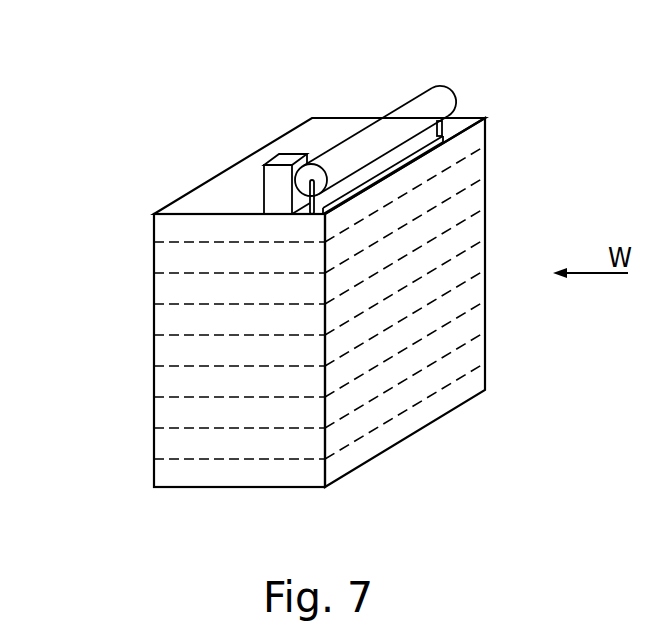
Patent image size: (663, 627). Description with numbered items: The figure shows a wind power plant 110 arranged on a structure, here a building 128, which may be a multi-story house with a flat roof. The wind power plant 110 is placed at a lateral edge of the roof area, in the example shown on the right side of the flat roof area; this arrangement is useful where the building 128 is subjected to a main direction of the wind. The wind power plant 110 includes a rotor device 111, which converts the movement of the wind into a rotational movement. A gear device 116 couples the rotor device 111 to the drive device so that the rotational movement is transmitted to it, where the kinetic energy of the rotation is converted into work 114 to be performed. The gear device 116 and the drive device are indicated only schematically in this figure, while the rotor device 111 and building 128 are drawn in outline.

The wind power plant 110 is at (462, 85).
The rotor device 111 is at (349, 139).
The work 114 is at (226, 158).
The gear device 116 is at (265, 164).
The building 128 is at (154, 343).